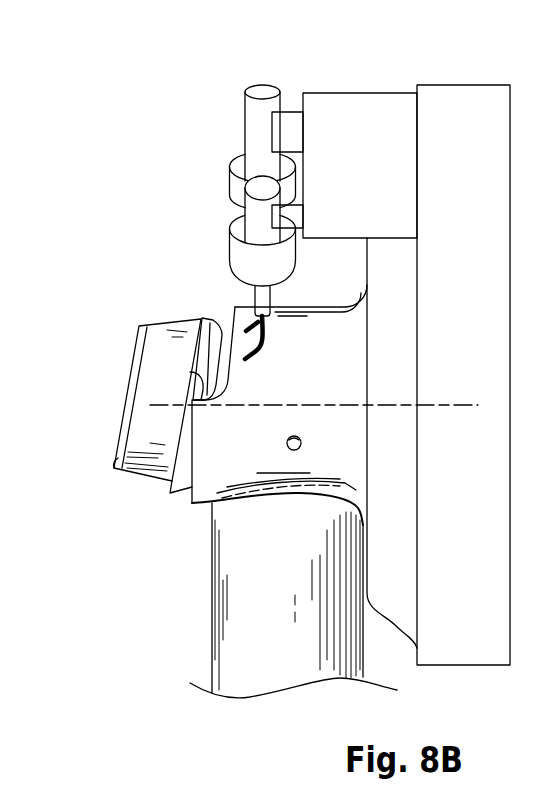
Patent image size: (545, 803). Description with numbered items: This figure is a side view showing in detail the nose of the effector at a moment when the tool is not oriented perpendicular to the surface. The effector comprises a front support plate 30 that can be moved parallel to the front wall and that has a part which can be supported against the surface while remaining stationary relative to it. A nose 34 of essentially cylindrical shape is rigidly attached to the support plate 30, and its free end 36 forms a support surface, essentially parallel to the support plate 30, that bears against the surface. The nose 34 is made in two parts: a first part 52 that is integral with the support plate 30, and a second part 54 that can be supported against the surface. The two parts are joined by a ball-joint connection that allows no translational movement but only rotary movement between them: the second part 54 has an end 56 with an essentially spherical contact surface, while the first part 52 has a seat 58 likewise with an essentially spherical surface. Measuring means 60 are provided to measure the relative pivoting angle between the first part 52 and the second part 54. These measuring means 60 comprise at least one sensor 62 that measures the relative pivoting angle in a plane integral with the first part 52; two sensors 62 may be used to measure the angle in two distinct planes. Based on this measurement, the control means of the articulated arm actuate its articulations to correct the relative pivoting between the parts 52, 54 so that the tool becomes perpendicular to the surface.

The front support plate 30 is at (462, 112).
The measuring means 60 is at (332, 78).
The sensor 62 is at (227, 182).
The nose 34 is at (242, 473).
The second part 54 is at (273, 467).
The first part 52 is at (143, 443).
The end 56 is at (211, 330).
The seat 58 is at (190, 372).
The free end 36 is at (126, 393).